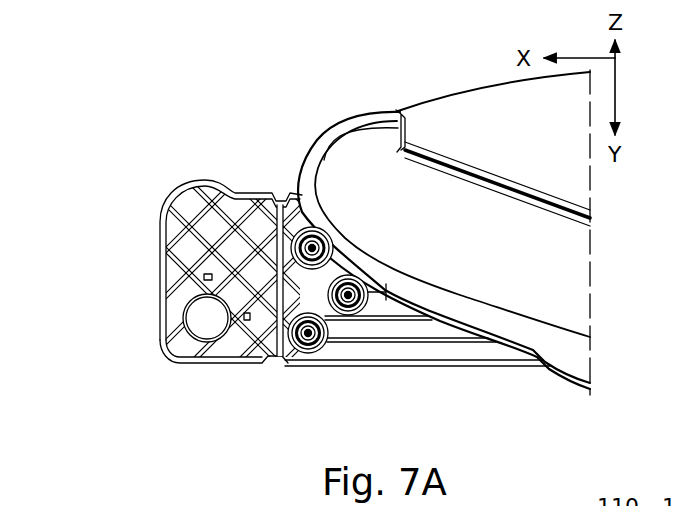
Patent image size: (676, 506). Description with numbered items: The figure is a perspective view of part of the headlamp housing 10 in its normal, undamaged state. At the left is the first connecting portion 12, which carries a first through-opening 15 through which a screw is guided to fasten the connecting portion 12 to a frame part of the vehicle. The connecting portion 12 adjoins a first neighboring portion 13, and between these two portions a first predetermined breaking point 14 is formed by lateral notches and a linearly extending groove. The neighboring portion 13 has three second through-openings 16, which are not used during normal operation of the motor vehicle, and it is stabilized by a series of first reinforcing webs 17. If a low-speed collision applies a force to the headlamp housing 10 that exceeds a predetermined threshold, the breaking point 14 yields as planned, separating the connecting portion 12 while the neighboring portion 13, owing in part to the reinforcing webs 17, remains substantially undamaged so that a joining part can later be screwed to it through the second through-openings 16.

The headlamp housing 10 is at (533, 255).
The first connecting portion 12 is at (186, 180).
The first neighboring portion 13 is at (473, 370).
The first predetermined breaking point 14 is at (276, 196).
The first through-opening 15 is at (195, 318).
The second through-openings 16 is at (300, 228).
The first reinforcing webs 17 is at (408, 346).